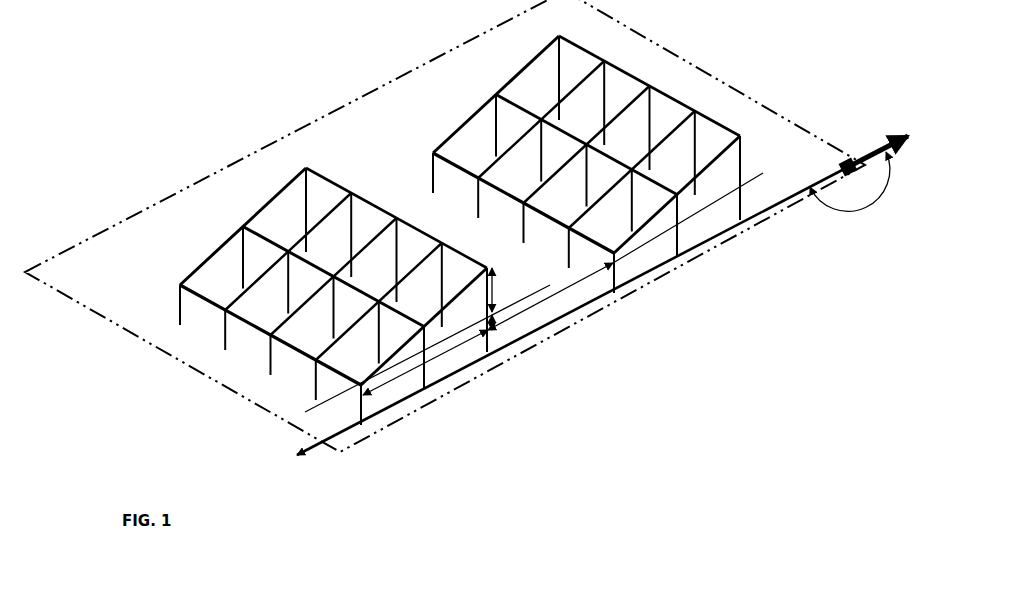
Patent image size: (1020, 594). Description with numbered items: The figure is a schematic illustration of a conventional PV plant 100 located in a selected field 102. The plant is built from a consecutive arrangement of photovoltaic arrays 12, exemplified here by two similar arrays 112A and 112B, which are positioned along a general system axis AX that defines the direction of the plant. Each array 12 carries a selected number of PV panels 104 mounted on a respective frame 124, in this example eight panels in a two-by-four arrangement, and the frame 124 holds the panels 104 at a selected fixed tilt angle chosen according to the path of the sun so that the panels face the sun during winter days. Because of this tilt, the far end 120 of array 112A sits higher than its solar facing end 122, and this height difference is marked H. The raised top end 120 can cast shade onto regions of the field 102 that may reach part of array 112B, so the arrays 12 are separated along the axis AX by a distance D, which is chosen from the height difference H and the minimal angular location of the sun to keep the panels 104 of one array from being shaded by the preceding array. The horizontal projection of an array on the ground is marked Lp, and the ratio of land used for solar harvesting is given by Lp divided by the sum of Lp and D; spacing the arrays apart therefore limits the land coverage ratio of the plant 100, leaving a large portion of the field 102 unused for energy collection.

The PV plant 100 is at (173, 83).
The field 102 is at (93, 250).
The PV panels 104 is at (215, 273).
The photovoltaic arrays 12 is at (224, 116).
The first PV array 112A is at (290, 183).
The second PV array 112B is at (495, 96).
The far end 120 is at (387, 206).
The solar facing end 122 is at (458, 166).
The frame 124 is at (180, 307).
The height difference H is at (494, 298).
The distance between PV arrays D is at (527, 310).
The horizontal projection of the array Lp is at (400, 375).
The general system axis AX is at (889, 152).